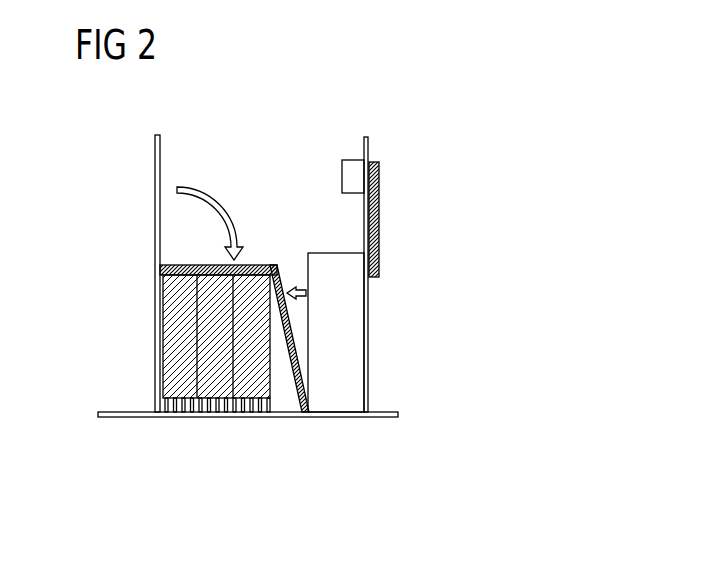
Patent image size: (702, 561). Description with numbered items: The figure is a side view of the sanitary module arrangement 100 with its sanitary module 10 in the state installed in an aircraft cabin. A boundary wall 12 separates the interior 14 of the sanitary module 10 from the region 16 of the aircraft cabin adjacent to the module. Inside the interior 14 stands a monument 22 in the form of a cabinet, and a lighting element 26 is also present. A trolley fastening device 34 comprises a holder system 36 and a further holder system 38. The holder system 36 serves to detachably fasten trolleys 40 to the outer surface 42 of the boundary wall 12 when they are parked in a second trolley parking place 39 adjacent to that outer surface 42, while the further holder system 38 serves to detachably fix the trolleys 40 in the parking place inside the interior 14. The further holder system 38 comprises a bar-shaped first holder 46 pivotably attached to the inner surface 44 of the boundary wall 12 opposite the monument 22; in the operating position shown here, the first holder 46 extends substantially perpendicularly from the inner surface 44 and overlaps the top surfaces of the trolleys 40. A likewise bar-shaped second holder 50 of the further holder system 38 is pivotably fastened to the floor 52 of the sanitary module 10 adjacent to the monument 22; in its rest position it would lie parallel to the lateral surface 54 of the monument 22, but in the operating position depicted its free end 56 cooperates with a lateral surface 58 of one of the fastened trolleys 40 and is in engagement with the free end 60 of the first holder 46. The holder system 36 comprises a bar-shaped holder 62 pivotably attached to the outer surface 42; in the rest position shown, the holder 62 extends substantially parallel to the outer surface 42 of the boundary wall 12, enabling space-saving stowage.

The sanitary module arrangement 100 is at (505, 106).
The sanitary module 10 is at (478, 160).
The boundary wall 12 is at (140, 173).
The interior 14 is at (266, 152).
The region 16 is at (428, 148).
The monument 22 is at (350, 268).
The lighting element 26 is at (350, 162).
The trolley fastening device 34 is at (138, 268).
The holder system 36 is at (422, 233).
The further holder system 38 is at (278, 426).
The second trolley parking place 39 is at (425, 413).
The trolleys 40 is at (175, 402).
The outer surface 42 is at (370, 326).
The inner surface 44 is at (165, 167).
The first holder 46 is at (200, 265).
The second holder 50 is at (294, 405).
The floor 52 is at (336, 418).
The lateral surface 54 is at (308, 262).
The free end 56 is at (278, 277).
The lateral surface 58 is at (268, 362).
The free end 60 is at (270, 265).
The holder 62 is at (381, 197).